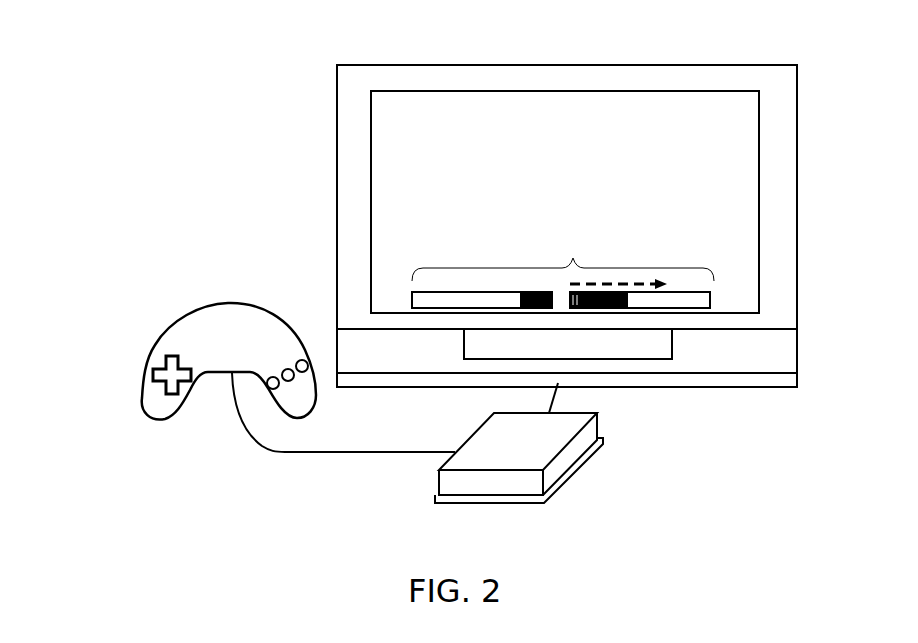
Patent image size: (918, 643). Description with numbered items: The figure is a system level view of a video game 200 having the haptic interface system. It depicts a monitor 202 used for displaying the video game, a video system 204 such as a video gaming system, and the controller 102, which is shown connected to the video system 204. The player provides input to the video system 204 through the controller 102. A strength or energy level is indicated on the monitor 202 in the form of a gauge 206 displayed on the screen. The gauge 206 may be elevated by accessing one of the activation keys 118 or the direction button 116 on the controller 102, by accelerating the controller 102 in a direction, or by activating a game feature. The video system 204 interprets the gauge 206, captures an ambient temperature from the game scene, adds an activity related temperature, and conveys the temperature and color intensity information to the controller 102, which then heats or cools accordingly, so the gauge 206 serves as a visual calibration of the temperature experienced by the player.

The video game 200 is at (229, 50).
The monitor 202 is at (565, 202).
The video system 204 is at (538, 436).
The gauge 206 is at (572, 262).
The controller 102 is at (210, 375).
The direction button 116 is at (167, 352).
The activation keys 118 is at (290, 362).